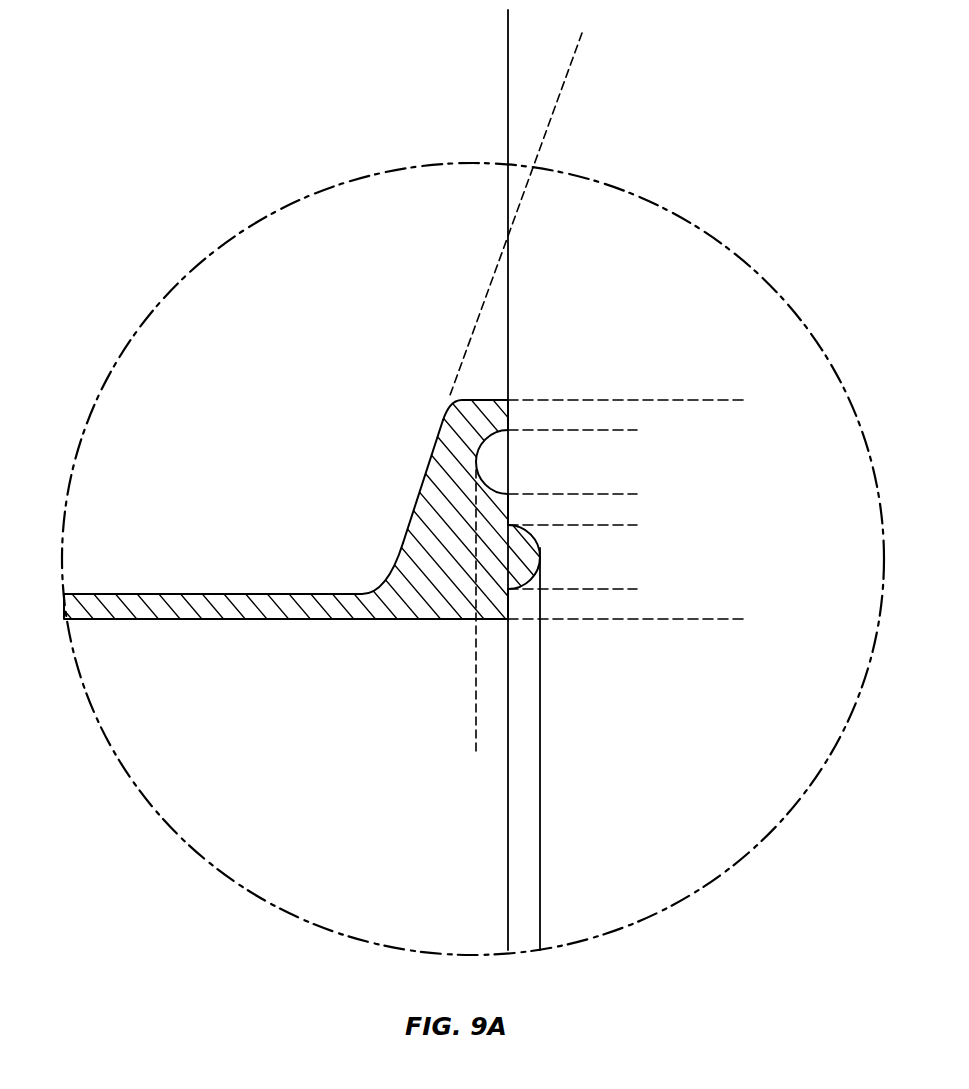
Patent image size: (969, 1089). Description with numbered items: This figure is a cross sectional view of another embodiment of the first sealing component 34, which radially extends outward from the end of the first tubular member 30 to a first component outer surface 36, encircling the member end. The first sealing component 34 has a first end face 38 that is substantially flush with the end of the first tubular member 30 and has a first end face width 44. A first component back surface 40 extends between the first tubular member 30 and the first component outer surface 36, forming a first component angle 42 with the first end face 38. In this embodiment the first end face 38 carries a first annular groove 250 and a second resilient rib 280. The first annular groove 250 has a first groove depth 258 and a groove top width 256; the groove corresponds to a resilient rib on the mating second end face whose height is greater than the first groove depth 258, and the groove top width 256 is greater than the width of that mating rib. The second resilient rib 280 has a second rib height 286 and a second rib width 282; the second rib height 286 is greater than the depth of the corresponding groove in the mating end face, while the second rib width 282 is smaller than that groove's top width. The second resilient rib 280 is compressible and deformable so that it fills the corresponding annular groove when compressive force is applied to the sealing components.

The first tubular member 30 is at (197, 607).
The first sealing component 34 is at (417, 552).
The first component outer surface 36 is at (473, 400).
The first end face 38 is at (508, 427).
The first component back surface 40 is at (422, 477).
The first component angle 42 is at (583, 22).
The first end face width 44 is at (742, 400).
The first annular groove 250 is at (480, 478).
The second groove top width 256 is at (631, 430).
The first groove depth 258 is at (532, 752).
The second resilient rib 280 is at (537, 553).
The second rib width 282 is at (631, 525).
The second rib height 286 is at (482, 855).